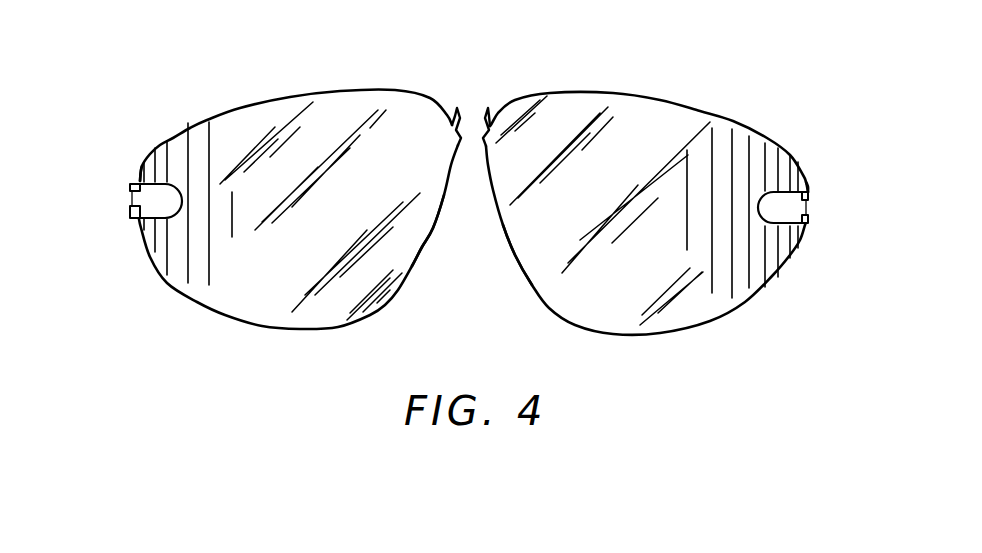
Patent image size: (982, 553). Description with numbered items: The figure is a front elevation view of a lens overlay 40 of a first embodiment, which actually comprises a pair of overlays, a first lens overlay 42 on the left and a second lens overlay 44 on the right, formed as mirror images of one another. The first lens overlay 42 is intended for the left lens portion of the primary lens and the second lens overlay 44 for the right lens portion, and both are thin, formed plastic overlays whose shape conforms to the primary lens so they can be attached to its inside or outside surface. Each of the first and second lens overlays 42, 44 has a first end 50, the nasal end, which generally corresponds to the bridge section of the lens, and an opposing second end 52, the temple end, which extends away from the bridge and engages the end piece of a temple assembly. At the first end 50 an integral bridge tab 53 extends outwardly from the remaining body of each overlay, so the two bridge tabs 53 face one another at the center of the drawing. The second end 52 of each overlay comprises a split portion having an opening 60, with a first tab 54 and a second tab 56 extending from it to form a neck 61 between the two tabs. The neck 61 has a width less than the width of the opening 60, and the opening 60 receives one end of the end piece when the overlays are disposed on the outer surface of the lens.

The lens overlay 40 is at (526, 51).
The first lens overlay 42 is at (238, 306).
The second lens overlay 44 is at (693, 306).
The first end 50 is at (522, 262).
The bridge tab 53 is at (477, 111).
The second end 52 is at (137, 178).
The first tab 54 is at (130, 186).
The second tab 56 is at (133, 212).
The opening 60 is at (162, 190).
The neck 61 is at (132, 198).